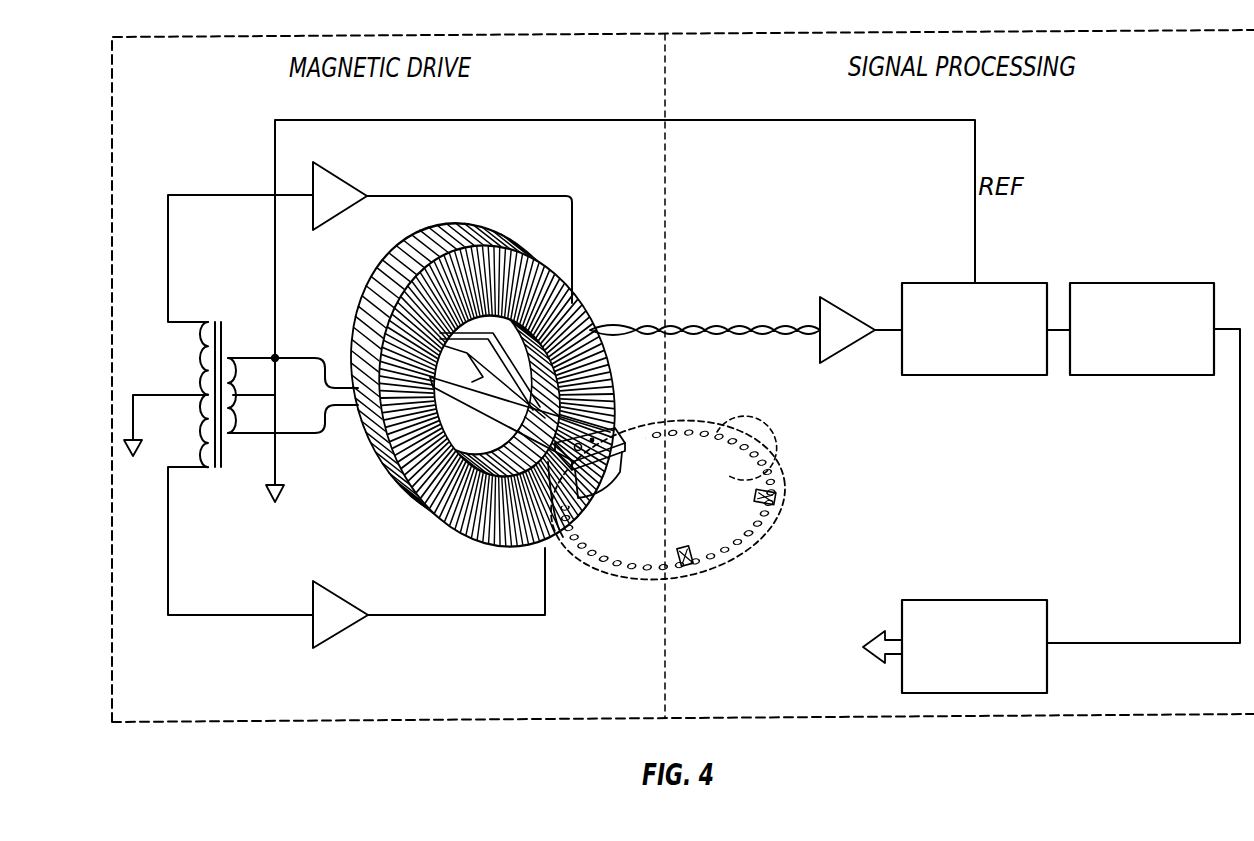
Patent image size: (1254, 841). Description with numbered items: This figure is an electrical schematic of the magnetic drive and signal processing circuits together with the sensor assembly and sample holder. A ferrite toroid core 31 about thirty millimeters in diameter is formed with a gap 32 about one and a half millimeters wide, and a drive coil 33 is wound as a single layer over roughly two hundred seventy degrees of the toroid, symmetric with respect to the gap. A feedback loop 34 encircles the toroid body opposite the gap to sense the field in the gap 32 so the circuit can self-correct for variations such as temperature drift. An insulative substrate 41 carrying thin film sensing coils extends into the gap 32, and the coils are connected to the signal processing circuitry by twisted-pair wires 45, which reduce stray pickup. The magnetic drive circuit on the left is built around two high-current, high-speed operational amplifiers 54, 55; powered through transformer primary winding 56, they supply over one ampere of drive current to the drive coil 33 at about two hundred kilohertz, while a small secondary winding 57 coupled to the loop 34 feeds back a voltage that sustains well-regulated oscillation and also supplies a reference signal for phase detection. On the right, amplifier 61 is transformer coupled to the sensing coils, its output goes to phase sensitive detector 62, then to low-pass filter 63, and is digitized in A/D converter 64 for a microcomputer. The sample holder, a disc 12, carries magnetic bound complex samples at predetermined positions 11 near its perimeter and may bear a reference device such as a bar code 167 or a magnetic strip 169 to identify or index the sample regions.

The predetermined positions 11 is at (757, 413).
The disc 12 is at (760, 462).
The ferrite toroid core 31 is at (594, 493).
The gap 32 is at (630, 424).
The drive coil 33 is at (493, 247).
The feedback loop 34 is at (387, 425).
The insulative substrate 41 is at (545, 443).
The twisted-pair wires 45 is at (772, 322).
The operational amplifier 54 is at (337, 182).
The operational amplifier 55 is at (350, 627).
The transformer primary winding 56 is at (211, 322).
The secondary winding 57 is at (240, 357).
The amplifier 61 is at (843, 315).
The phase sensitive detector 62 is at (1018, 283).
The low-pass filter 63 is at (1178, 283).
The A/D converter 64 is at (998, 600).
The bar code 167 is at (780, 499).
The magnetic strip 169 is at (697, 563).